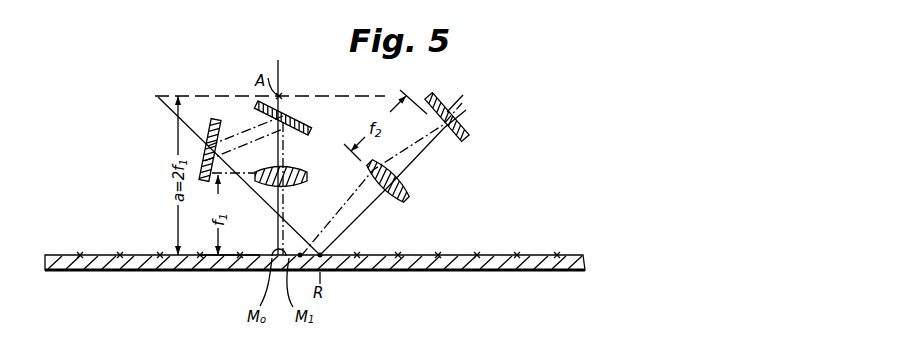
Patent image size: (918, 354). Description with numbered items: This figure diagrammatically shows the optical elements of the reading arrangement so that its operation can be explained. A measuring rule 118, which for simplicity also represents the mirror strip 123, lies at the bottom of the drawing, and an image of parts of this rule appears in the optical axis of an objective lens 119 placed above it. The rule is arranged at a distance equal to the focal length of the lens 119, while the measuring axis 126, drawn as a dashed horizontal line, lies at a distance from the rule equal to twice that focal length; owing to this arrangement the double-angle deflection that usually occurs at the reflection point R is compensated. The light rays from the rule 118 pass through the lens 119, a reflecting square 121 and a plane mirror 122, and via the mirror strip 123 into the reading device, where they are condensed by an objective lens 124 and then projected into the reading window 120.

The measuring rule 118 is at (233, 262).
The objective lens 119 is at (288, 168).
The reading window 120 is at (457, 130).
The reflecting square 121 is at (286, 120).
The plane mirror 122 is at (226, 102).
The mirror strip 123 is at (447, 265).
The objective lens 124 is at (399, 203).
The measuring axis 126 is at (355, 80).